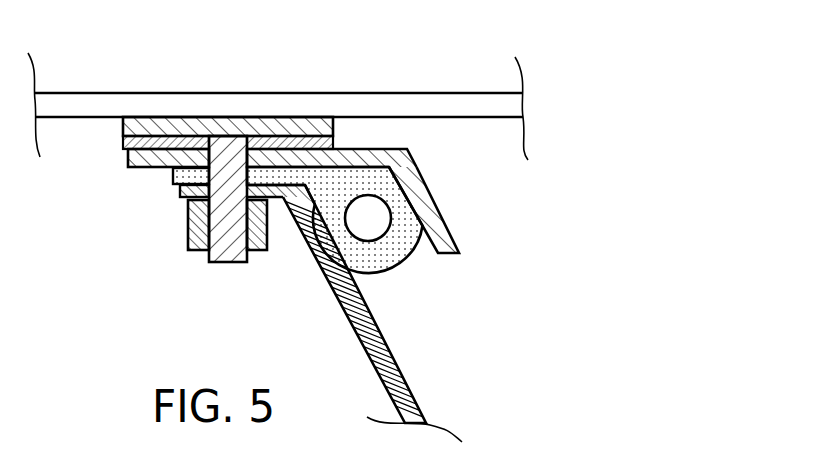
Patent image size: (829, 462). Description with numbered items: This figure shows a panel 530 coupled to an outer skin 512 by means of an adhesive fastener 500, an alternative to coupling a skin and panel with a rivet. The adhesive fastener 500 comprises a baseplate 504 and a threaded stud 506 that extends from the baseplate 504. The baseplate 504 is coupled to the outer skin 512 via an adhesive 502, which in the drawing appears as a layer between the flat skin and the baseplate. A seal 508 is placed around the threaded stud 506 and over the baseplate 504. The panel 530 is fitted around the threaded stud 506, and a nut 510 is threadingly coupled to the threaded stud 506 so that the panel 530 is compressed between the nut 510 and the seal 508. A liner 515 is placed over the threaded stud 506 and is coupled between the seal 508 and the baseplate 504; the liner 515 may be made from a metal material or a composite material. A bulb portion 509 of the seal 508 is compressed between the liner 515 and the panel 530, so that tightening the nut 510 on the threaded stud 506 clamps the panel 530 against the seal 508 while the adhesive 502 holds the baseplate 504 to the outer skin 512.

The adhesive fastener 500 is at (107, 229).
The adhesive 502 is at (124, 127).
The baseplate 504 is at (130, 161).
The threaded stud 506 is at (230, 263).
The seal 508 is at (403, 252).
The bulb portion 509 is at (367, 260).
The nut 510 is at (188, 243).
The outer skin 512 is at (437, 102).
The liner 515 is at (438, 200).
The panel 530 is at (388, 350).